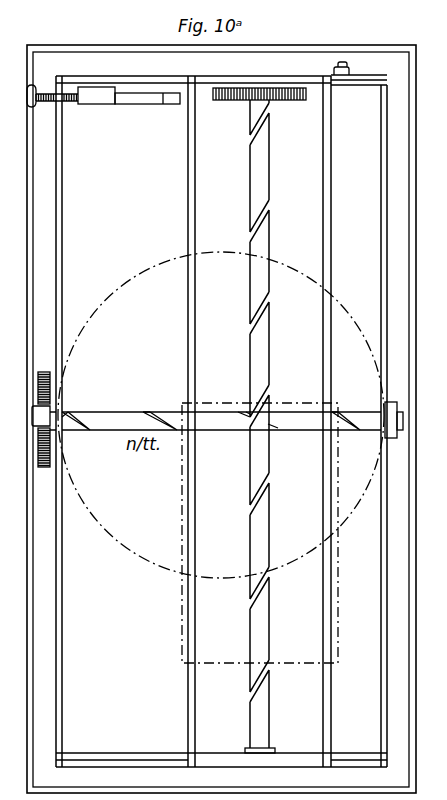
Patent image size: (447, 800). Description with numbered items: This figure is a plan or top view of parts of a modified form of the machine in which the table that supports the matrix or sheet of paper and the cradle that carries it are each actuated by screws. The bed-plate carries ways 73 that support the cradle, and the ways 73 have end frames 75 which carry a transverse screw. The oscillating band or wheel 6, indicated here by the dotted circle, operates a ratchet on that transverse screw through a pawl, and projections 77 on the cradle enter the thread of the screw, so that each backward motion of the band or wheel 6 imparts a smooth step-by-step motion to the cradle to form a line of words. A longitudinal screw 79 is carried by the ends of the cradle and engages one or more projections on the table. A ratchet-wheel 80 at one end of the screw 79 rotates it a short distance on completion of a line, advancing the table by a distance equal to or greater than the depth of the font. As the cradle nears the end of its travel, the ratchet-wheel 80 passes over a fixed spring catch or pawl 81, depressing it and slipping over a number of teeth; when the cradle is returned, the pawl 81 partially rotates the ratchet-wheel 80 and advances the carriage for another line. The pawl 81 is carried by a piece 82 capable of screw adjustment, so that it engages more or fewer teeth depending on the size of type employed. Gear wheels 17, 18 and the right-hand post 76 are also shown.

The oscillating band or wheel 6 is at (221, 415).
The gear wheel 17 is at (38, 450).
The gear wheel 18 is at (38, 388).
The ways 73 is at (123, 759).
The end frames 75 is at (53, 545).
The right upright post 76 is at (376, 426).
The projections 77 is at (176, 411).
The longitudinal screw 79 is at (262, 178).
The ratchet-wheel 80 is at (283, 101).
The spring catch or pawl 81 is at (149, 104).
The piece 82 is at (88, 104).